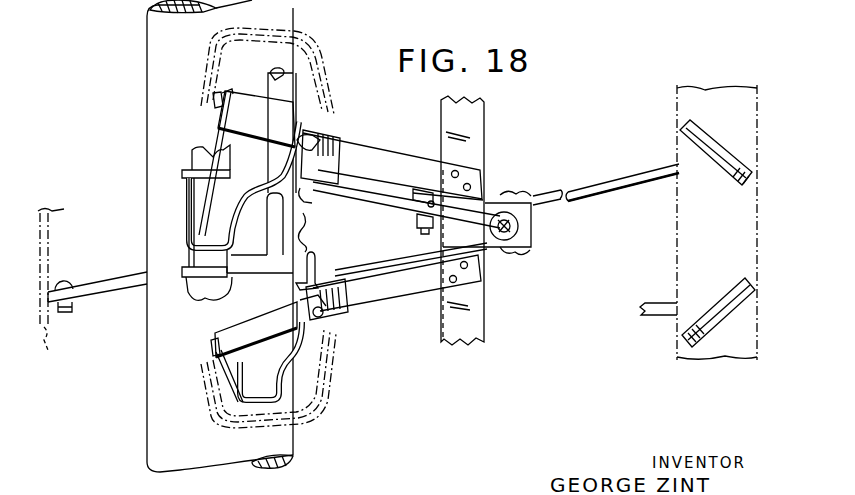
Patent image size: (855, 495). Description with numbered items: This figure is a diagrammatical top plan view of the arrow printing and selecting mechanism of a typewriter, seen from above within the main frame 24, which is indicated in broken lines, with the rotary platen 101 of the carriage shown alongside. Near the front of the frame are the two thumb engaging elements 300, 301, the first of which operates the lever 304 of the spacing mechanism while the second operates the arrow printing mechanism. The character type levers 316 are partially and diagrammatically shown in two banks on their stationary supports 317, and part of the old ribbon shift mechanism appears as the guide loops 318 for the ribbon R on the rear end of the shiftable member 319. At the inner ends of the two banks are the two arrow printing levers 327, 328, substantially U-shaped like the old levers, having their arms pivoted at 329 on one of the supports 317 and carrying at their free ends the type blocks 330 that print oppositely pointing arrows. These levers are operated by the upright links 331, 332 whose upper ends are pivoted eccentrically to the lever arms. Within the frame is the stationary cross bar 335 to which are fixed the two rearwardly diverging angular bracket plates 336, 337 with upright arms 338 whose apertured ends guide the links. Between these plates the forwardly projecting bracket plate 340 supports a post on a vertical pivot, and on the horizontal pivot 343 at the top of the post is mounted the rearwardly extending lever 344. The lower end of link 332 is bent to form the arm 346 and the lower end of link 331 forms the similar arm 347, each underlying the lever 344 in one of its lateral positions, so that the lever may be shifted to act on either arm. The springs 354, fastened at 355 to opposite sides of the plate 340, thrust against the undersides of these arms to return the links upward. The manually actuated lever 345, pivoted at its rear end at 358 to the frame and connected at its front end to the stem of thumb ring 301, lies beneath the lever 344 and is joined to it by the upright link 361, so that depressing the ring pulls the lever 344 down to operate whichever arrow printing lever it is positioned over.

The main frame 24 is at (771, 122).
The rotary platen 101 is at (156, 84).
The thumb engaging element 300 is at (752, 290).
The thumb engaging element 301 is at (740, 172).
The lever 304 is at (652, 306).
The type levers 316 is at (305, 62).
The stationary supports 317 is at (262, 123).
The guide loops 318 is at (182, 180).
The shiftable member 319 is at (303, 233).
The arrow printing lever 327 is at (214, 380).
The arrow printing lever 328 is at (213, 140).
The pivot 329 is at (212, 106).
The type blocks 330 is at (196, 228).
The upright link 331 is at (322, 318).
The upright link 332 is at (306, 135).
The stationary cross bar 335 is at (478, 118).
The angular bracket plate 336 is at (404, 296).
The angular bracket plate 337 is at (362, 155).
The upright arms 338 is at (324, 150).
The bracket plate 340 is at (534, 230).
The horizontal pivot 343 is at (505, 242).
The lever 344 is at (380, 205).
The manually actuated lever 345 is at (568, 186).
The arm 346 is at (310, 202).
The arm 347 is at (314, 258).
The springs 354 is at (410, 222).
The spring fastening point 355 is at (525, 255).
The pivotal connection 358 is at (74, 283).
The upright link 361 is at (428, 190).
The ribbon R is at (190, 162).